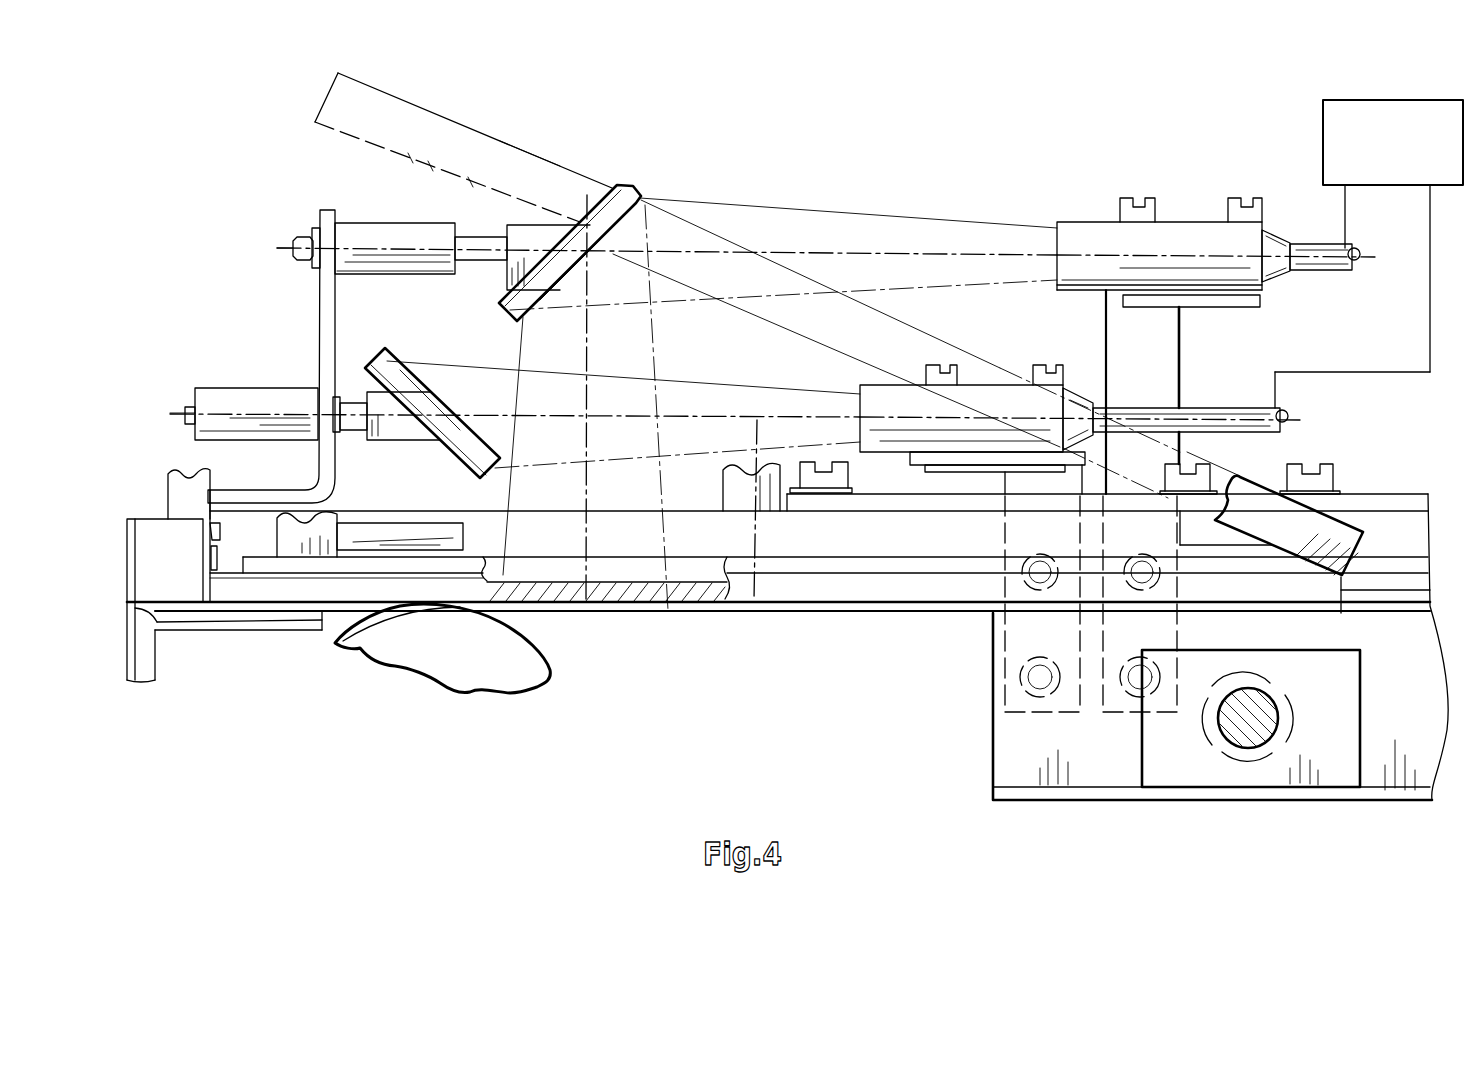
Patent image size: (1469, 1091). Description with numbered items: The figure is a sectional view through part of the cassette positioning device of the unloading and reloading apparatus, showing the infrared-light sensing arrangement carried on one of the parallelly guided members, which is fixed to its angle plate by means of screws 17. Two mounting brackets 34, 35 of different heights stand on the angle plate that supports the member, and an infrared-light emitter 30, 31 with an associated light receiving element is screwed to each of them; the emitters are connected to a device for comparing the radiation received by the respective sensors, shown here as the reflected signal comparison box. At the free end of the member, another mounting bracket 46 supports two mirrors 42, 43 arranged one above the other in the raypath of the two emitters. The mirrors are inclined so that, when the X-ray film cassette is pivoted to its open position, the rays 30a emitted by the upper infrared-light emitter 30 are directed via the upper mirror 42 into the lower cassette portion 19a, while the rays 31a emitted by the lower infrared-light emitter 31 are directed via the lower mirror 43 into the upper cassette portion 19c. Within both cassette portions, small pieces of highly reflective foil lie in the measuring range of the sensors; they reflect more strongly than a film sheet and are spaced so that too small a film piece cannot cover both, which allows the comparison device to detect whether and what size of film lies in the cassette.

The upper cassette portion 19c is at (553, 158).
The upper mirror 42 is at (588, 213).
The rays of the upper infrared-light emitter 30a is at (834, 250).
The lower infrared-light emitter 31 is at (983, 407).
The upper infrared-light emitter 30 is at (1187, 243).
The mounting bracket 46 is at (323, 332).
The mounting bracket 34 is at (1143, 373).
The screws 17 is at (1330, 470).
The lower cassette portion 19a is at (283, 587).
The lower mirror 43 is at (442, 455).
The rays of the lower infrared-light emitter 31a is at (754, 600).
The mounting bracket 35 is at (1030, 630).